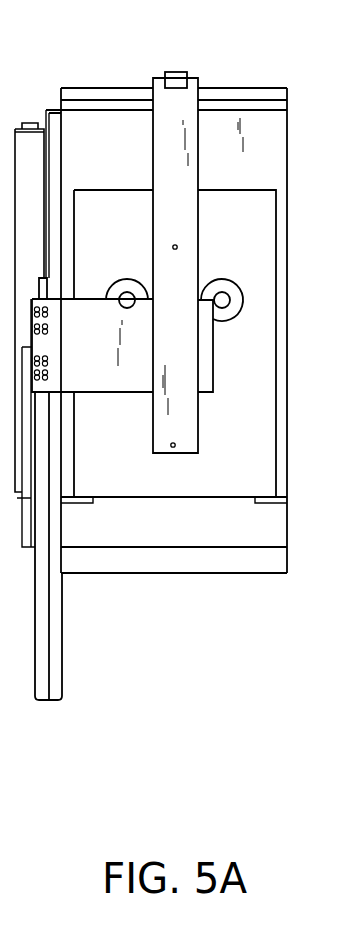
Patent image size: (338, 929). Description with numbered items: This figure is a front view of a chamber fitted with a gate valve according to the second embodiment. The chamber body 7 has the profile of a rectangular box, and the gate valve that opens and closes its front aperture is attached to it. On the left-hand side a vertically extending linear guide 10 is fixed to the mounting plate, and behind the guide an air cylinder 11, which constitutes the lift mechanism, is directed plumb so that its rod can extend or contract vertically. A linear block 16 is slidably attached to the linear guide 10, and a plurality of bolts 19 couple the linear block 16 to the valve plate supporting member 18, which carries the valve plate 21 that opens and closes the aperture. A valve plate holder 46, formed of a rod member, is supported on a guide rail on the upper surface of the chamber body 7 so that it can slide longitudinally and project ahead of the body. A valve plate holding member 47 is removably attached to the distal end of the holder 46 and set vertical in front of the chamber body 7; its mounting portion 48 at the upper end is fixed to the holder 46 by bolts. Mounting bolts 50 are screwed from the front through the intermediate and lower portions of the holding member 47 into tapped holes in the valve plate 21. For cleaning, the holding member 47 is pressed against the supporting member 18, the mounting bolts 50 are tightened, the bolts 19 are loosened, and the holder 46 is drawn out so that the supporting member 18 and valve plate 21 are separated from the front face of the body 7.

The chamber body 7 is at (273, 528).
The linear guide 10 is at (53, 625).
The air cylinder 11 is at (32, 153).
The linear block 16 is at (33, 345).
The valve plate supporting member 18 is at (108, 380).
The bolts 19 is at (23, 320).
The valve plate 21 is at (253, 387).
The valve plate holder 46 is at (177, 70).
The valve plate holding member 47 is at (198, 175).
The mounting portion 48 is at (185, 98).
The mounting bolts 50 is at (177, 247).